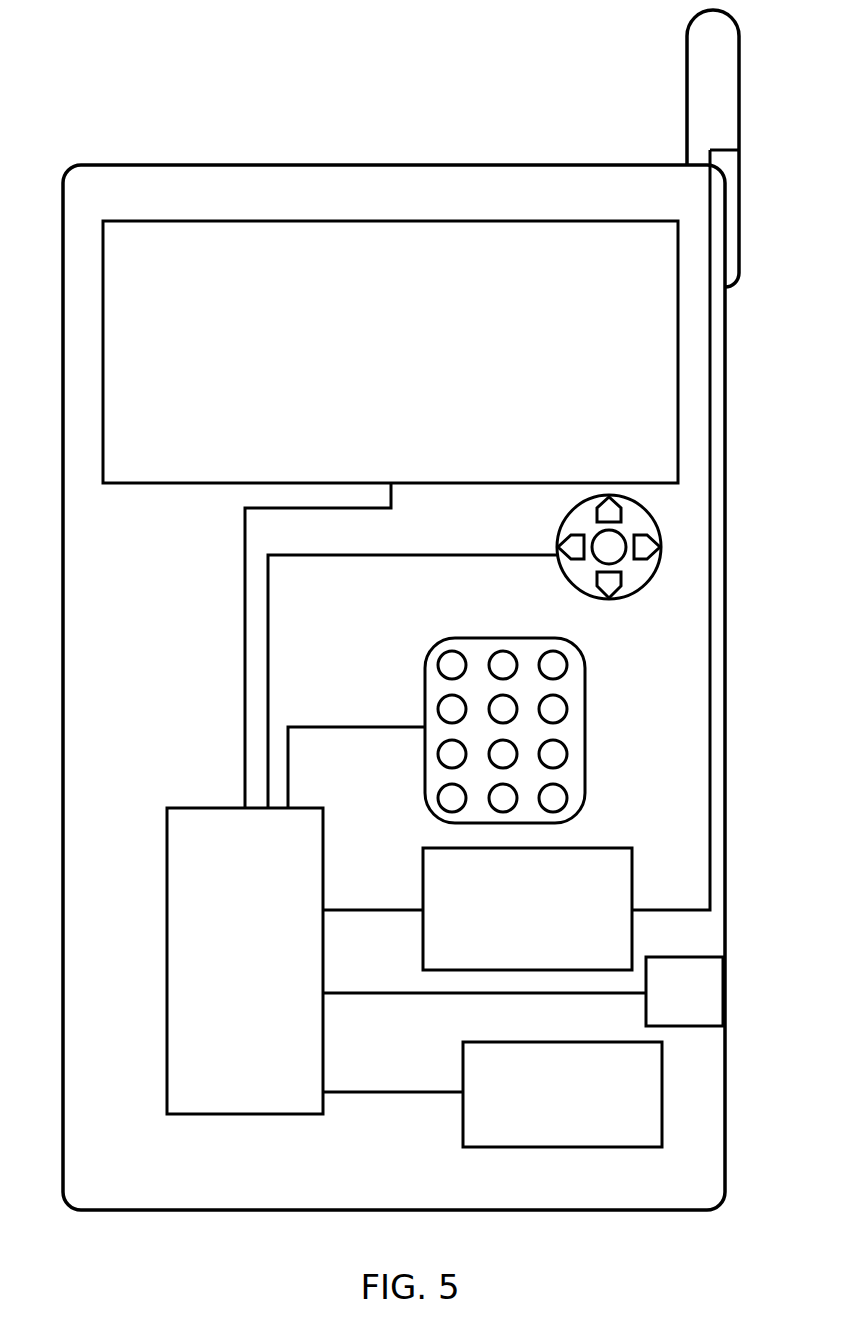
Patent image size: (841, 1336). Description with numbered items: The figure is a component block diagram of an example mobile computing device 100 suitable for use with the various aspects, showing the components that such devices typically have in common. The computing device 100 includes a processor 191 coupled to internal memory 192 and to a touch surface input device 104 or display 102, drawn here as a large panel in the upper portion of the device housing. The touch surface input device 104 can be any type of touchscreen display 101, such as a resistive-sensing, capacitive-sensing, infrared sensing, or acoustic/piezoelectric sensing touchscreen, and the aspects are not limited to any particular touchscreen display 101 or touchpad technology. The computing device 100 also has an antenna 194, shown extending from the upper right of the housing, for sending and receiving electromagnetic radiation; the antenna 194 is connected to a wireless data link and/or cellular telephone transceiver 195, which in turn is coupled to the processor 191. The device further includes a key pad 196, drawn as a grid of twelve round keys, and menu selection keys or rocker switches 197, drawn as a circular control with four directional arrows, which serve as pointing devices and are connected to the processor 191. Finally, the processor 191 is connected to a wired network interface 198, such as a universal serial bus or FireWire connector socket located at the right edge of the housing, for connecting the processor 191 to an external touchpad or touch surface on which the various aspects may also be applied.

The computing device 100 is at (395, 165).
The touchscreen display 101 is at (390, 326).
The display 102 is at (390, 352).
The touch surface input device 104 is at (390, 352).
The processor 191 is at (245, 961).
The internal memory 192 is at (562, 1094).
The antenna 194 is at (686, 42).
The cellular telephone transceiver 195 is at (527, 909).
The key pad 196 is at (585, 727).
The rocker switches 197 is at (609, 600).
The wired network interface 198 is at (684, 991).